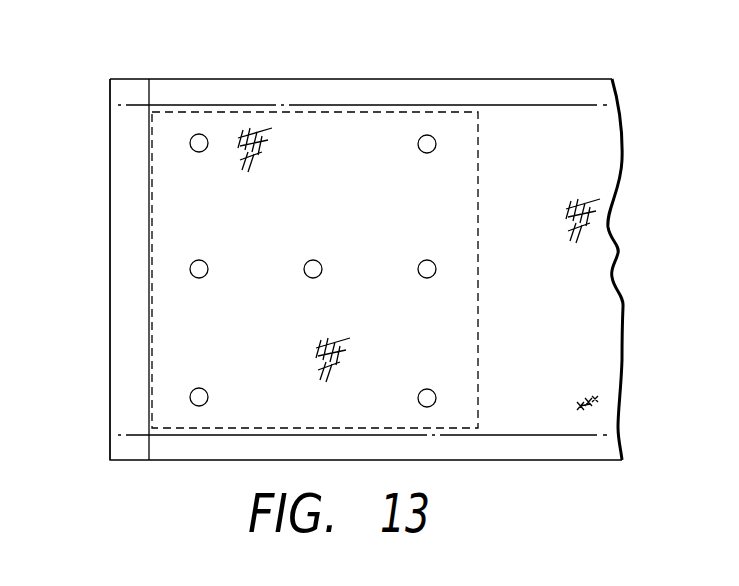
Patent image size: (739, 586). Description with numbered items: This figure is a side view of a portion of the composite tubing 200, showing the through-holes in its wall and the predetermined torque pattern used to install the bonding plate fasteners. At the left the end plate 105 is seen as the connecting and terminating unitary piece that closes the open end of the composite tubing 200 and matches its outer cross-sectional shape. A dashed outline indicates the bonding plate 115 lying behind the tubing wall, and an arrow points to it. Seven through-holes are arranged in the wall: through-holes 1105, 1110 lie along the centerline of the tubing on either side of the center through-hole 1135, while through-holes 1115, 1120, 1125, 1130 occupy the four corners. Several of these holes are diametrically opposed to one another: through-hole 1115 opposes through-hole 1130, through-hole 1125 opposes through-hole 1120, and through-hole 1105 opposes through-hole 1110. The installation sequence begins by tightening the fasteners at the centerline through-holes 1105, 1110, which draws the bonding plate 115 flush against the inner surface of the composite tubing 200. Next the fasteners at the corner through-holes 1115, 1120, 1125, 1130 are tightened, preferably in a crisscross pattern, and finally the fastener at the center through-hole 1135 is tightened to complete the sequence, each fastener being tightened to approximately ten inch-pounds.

The end plate 105 is at (128, 82).
The composite tubing 200 is at (310, 83).
The bonding plate 115 is at (478, 194).
The through-hole 1105 is at (193, 275).
The through-hole 1110 is at (433, 276).
The through-hole 1115 is at (193, 149).
The through-hole 1120 is at (193, 403).
The through-hole 1125 is at (433, 150).
The through-hole 1130 is at (433, 404).
The center through-hole 1135 is at (316, 261).